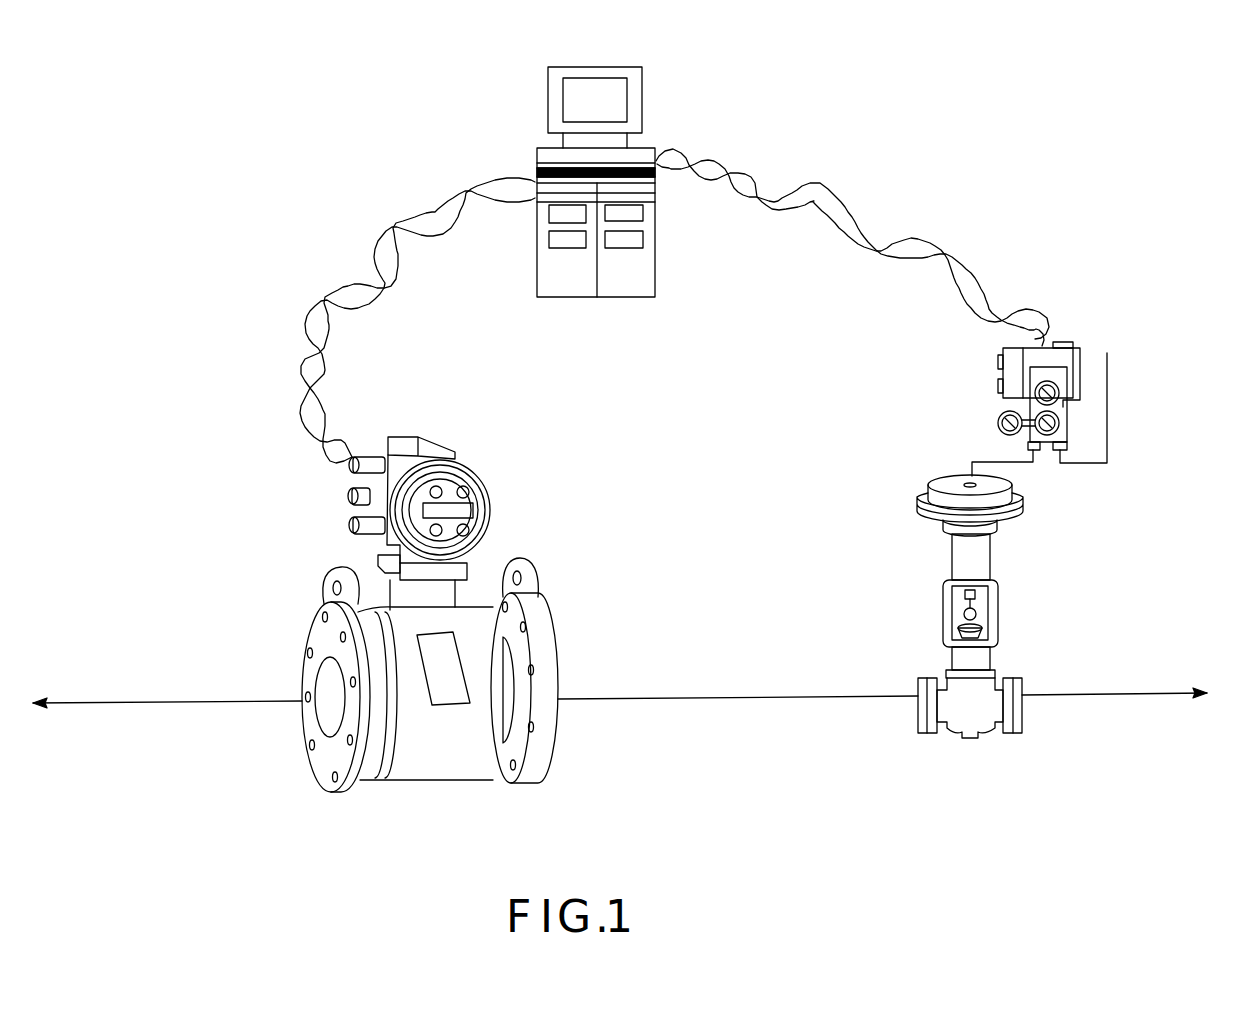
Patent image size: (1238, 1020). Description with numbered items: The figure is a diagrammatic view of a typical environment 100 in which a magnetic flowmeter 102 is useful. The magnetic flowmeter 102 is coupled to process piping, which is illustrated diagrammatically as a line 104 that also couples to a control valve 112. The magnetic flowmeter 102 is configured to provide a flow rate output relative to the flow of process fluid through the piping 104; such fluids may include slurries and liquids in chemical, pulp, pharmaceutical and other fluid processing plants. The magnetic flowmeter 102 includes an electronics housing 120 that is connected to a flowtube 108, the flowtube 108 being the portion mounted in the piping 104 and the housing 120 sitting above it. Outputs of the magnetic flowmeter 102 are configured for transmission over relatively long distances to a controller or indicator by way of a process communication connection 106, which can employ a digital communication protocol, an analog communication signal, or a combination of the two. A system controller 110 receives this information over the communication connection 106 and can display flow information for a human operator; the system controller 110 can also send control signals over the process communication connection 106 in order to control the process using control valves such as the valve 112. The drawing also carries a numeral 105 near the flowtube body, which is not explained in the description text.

The environment 100 is at (988, 153).
The magnetic flowmeter 102 is at (614, 538).
The process piping 104 is at (675, 698).
The flowtube 105 is at (433, 760).
The process communication connection 106 is at (391, 223).
The flowtube 108 is at (308, 748).
The system controller 110 is at (642, 90).
The control valve 112 is at (991, 548).
The electronics housing 120 is at (465, 465).